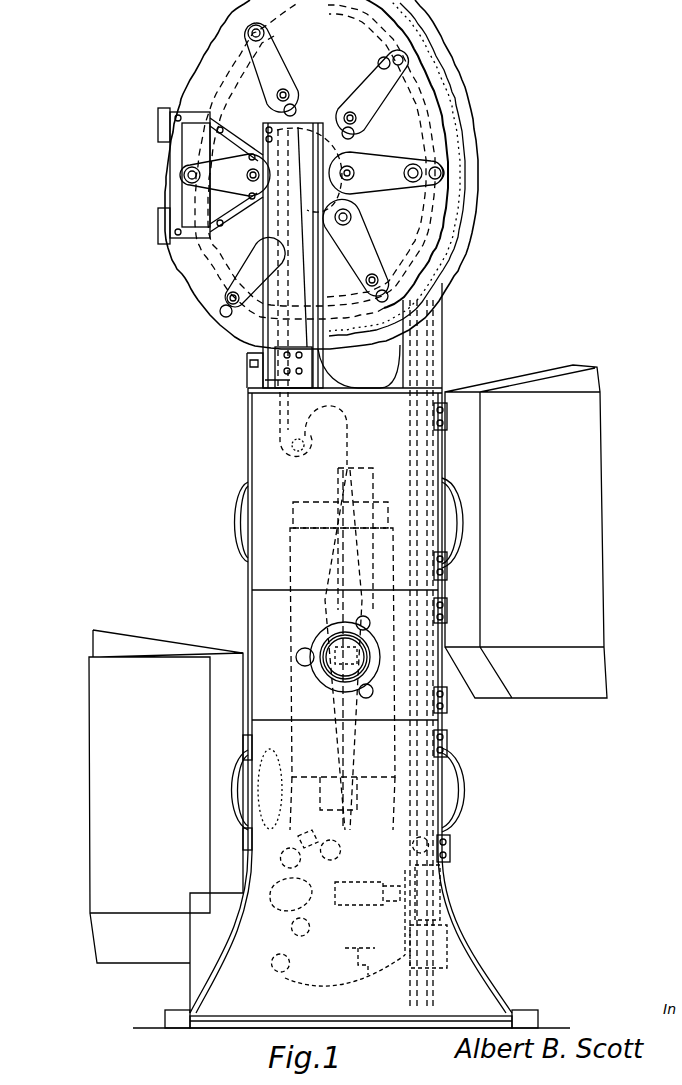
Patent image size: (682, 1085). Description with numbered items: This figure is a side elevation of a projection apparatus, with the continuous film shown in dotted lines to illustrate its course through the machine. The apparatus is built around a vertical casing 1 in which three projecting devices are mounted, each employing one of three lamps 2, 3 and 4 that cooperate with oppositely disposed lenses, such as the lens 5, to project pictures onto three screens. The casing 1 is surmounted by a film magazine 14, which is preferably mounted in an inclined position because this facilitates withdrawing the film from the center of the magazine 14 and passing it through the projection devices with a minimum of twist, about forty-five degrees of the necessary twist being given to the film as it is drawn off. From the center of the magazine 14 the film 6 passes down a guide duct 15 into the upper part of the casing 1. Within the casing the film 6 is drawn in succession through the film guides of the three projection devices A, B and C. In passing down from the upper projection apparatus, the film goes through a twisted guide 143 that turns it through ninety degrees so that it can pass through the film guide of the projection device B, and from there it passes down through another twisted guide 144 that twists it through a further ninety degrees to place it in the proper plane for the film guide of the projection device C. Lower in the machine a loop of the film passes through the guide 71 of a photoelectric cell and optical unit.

The film magazine 14 is at (470, 178).
The guide duct 15 is at (430, 340).
The vertical casing 1 is at (240, 422).
The film 6 is at (280, 430).
The projection device A is at (242, 469).
The lens 5 is at (233, 510).
The lamp 3 is at (302, 573).
The lamp 4 is at (600, 608).
The twisted guide 143 is at (363, 472).
The projection device B is at (257, 677).
The lamp 2 is at (88, 748).
The twisted guide 144 is at (348, 736).
The projection device C is at (459, 846).
The guide 71 is at (365, 907).